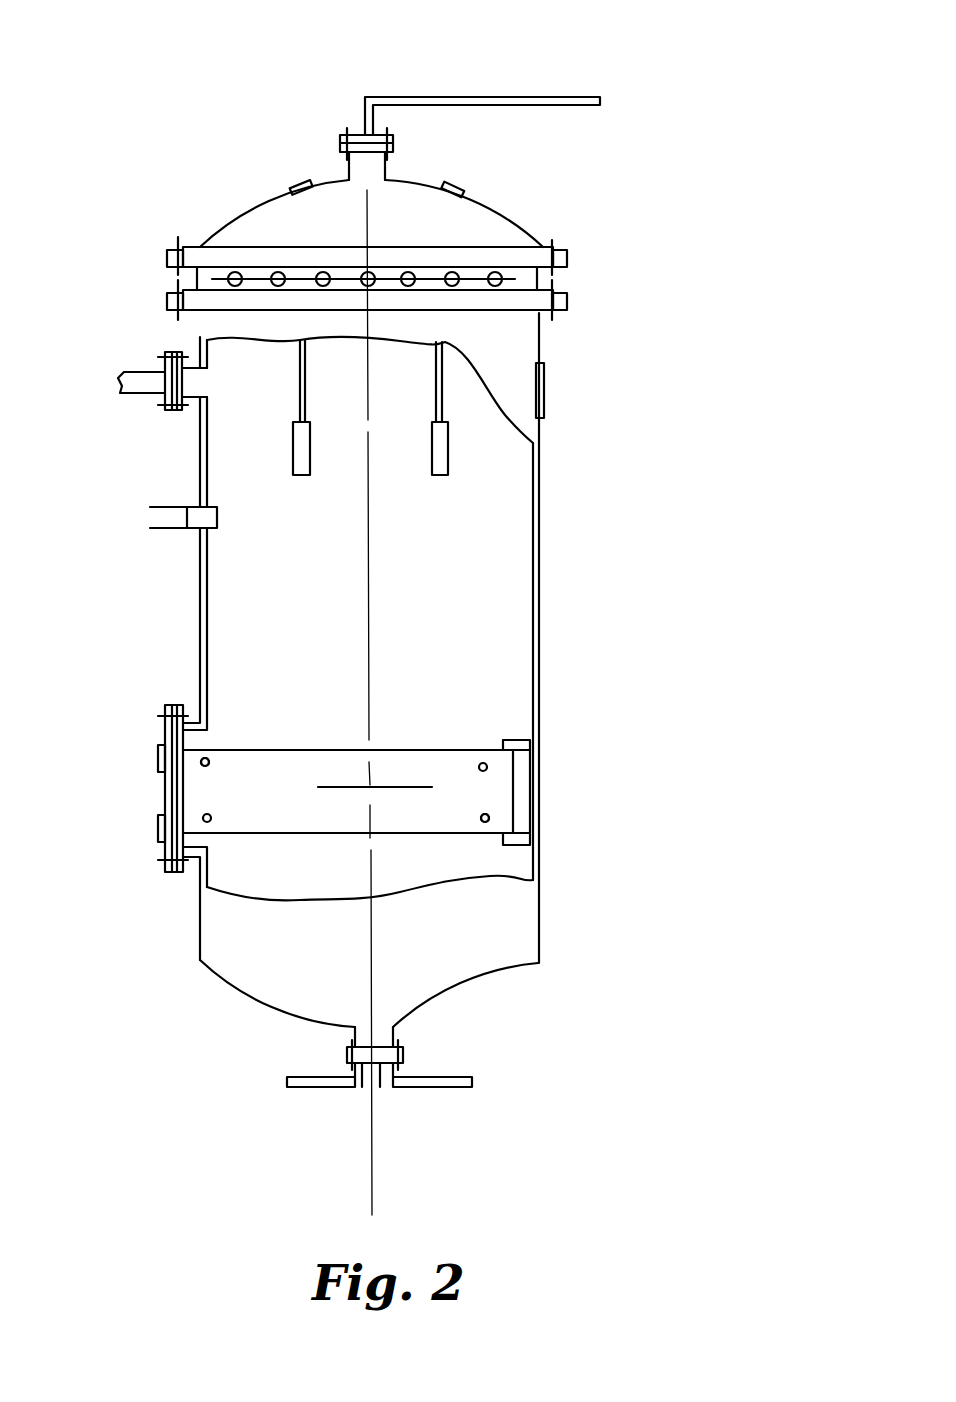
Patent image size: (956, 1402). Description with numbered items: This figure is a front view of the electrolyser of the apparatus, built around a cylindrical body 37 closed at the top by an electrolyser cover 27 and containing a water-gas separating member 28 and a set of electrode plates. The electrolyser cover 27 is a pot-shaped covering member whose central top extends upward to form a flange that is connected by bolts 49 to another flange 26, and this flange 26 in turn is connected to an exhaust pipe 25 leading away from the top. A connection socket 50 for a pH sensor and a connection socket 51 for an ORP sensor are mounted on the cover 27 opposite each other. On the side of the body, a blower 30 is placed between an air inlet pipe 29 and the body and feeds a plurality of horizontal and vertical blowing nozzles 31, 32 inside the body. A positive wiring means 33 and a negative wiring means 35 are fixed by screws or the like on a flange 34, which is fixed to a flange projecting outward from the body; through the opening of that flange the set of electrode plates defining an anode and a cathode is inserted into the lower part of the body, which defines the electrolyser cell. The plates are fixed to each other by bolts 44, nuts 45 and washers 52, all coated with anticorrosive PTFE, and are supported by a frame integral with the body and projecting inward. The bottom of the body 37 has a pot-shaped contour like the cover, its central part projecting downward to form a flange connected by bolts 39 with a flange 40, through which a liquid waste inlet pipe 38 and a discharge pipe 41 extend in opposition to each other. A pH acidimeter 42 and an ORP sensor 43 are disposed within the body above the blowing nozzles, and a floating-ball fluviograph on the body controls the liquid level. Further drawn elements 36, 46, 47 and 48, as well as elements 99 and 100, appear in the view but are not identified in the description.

The exhaust pipe 25 is at (482, 72).
The flange 26 is at (344, 108).
The electrolyser cover 27 is at (371, 153).
The water-gas separating member 28 is at (326, 203).
The air inlet pipe 29 is at (147, 479).
The blower 30 is at (144, 578).
The horizontal blowing nozzle 31 is at (236, 490).
The vertical blowing nozzle 32 is at (246, 566).
The positive wiring means 33 is at (132, 785).
The flange 34 is at (125, 776).
The negative wiring means 35 is at (120, 804).
The flange bolt 36 is at (119, 842).
The cylindrical body 37 is at (328, 965).
The liquid waste inlet pipe 38 is at (305, 1115).
The bolts 39 is at (330, 1046).
The flange 40 is at (392, 1115).
The discharge pipe 41 is at (433, 1115).
The pH acidimeter 42 is at (334, 449).
The ORP sensor 43 is at (466, 450).
The bolts 44 is at (467, 796).
The nuts 45 is at (516, 792).
The wall fitting 46 is at (586, 411).
The lower flange 47 is at (410, 278).
The upper flange 48 is at (405, 230).
The bolts 49 is at (426, 164).
The connection socket for pH sensor 50 is at (291, 150).
The connection socket for ORP sensor 51 is at (483, 161).
The washers 52 is at (345, 790).
The external pipe 99 is at (106, 346).
The side nozzle flange 100 is at (128, 332).